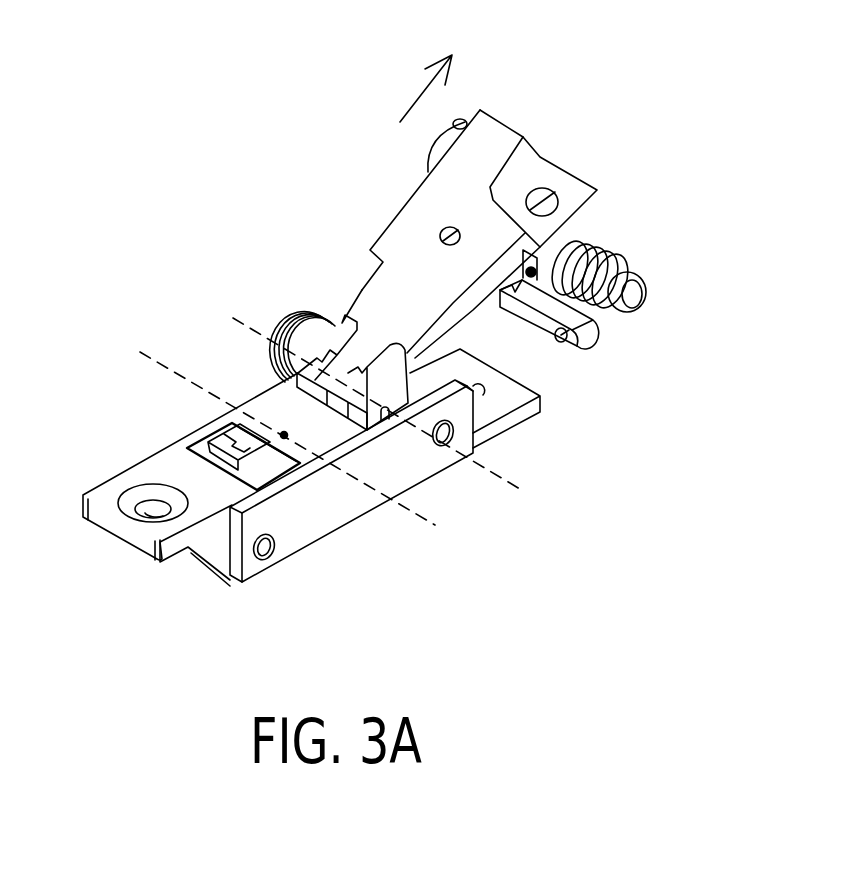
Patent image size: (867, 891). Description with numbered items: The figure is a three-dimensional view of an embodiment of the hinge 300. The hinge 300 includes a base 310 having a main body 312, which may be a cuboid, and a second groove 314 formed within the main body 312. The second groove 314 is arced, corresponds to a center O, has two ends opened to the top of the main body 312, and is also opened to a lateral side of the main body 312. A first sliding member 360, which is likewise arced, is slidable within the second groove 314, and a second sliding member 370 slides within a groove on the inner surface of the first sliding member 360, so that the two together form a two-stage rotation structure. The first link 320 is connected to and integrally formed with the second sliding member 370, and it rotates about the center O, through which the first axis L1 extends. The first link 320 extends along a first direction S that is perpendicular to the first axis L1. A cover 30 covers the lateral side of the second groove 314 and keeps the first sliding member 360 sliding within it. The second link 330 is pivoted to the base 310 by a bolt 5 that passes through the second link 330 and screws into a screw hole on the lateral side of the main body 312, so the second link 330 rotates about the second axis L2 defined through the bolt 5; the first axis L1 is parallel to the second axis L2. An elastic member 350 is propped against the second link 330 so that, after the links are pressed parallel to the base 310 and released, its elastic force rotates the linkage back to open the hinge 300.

The hinge 300 is at (682, 81).
The base 310 is at (192, 535).
The main body 312 is at (283, 403).
The second groove 314 is at (216, 472).
The first link 320 is at (412, 215).
The second link 330 is at (487, 305).
The elastic member 350 is at (608, 247).
The first sliding member 360 is at (338, 336).
The second sliding member 370 is at (258, 473).
The cover 30 is at (307, 518).
The bolt 5 is at (448, 430).
The center O is at (284, 432).
The first axis L1 is at (308, 449).
The second axis L2 is at (402, 414).
The first direction S is at (437, 72).